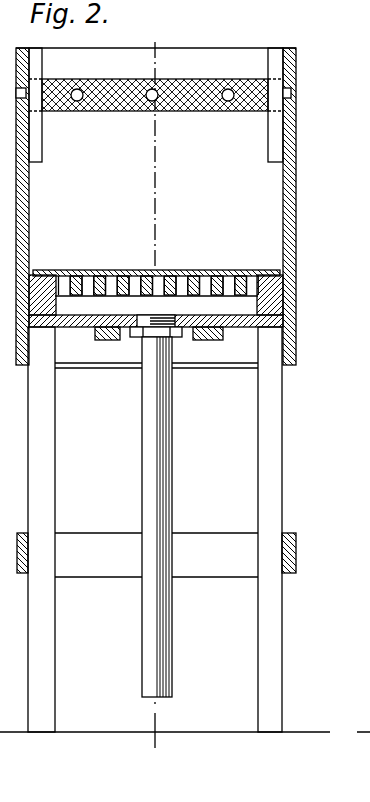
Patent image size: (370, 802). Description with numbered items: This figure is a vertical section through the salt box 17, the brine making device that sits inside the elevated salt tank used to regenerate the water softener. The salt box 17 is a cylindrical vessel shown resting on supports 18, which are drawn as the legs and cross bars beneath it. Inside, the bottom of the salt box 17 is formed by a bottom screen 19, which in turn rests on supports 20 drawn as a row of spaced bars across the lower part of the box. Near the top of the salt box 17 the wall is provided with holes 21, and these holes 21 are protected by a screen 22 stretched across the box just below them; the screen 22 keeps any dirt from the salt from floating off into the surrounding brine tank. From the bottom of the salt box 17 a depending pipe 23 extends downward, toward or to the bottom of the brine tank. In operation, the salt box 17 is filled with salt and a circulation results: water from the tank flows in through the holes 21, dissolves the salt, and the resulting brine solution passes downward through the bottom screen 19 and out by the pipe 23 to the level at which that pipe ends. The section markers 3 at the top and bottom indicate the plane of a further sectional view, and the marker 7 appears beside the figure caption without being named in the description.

The section line 3- 3 is at (153, 397).
The reference marker 7 is at (101, 31).
The salt box 17 is at (297, 204).
The supports 18 is at (276, 397).
The bottom screen 19 is at (86, 270).
The supports 20 is at (136, 270).
The holes 21 is at (290, 93).
The screen 22 is at (135, 79).
The depending pipe 23 is at (173, 397).